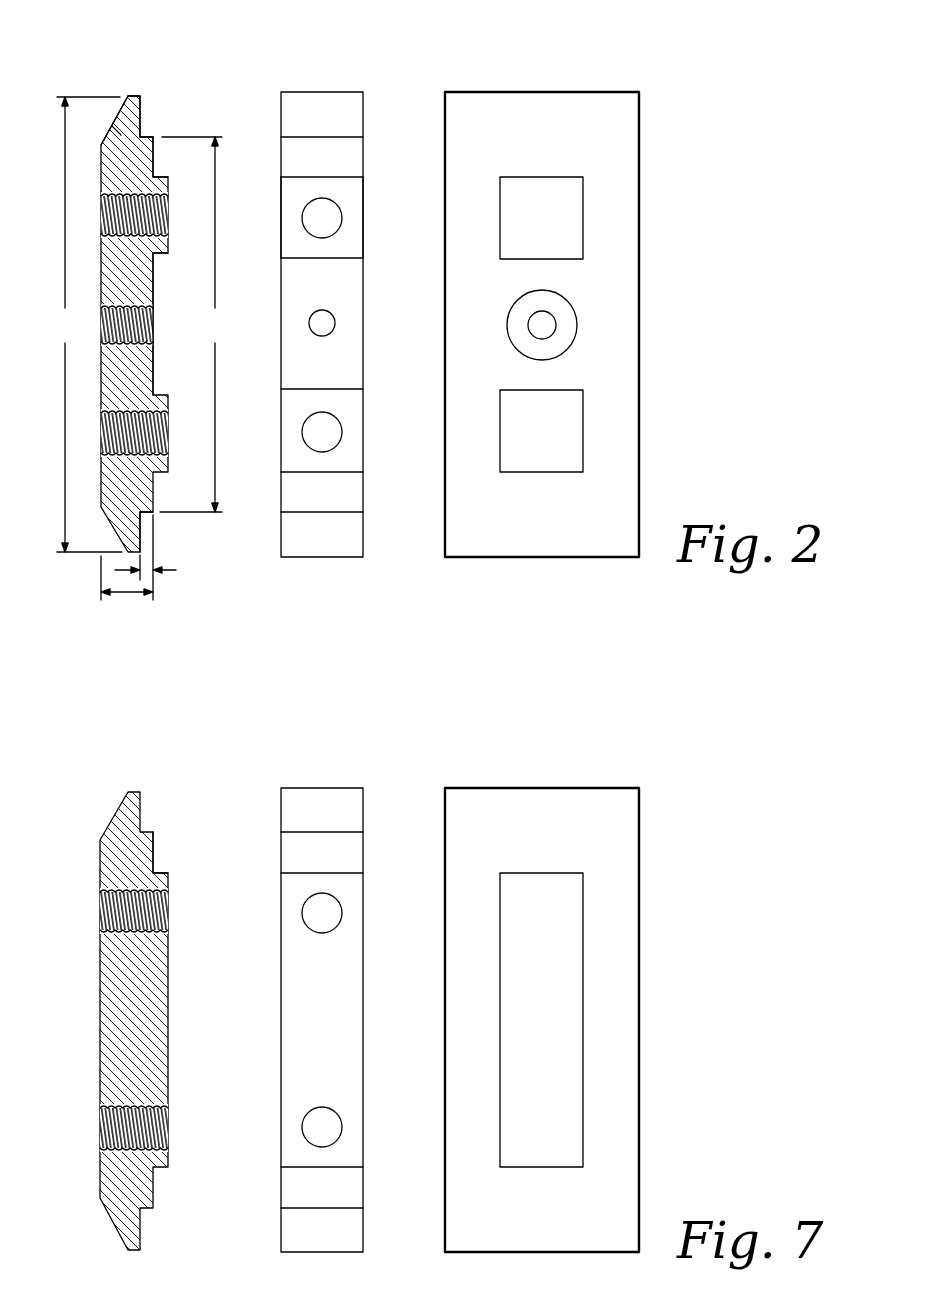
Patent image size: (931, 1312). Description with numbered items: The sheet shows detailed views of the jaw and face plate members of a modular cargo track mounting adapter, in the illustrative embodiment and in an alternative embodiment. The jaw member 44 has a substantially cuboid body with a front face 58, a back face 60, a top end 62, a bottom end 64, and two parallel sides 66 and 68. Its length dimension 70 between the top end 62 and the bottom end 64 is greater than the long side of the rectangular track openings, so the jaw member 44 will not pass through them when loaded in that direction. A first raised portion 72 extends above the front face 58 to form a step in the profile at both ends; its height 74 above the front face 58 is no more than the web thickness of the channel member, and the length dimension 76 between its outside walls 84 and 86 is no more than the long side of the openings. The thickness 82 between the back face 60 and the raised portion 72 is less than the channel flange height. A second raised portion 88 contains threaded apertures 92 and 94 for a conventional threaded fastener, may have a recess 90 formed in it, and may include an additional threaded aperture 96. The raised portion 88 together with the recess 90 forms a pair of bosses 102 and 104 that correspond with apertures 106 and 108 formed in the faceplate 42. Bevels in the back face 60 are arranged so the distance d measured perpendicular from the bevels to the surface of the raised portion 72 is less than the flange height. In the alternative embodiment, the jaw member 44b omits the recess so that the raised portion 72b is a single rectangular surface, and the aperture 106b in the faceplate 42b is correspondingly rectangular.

In FIG. 2, the faceplate 42 is at (659, 76).
In FIG. 2, the jaw member 44 is at (94, 78).
In FIG. 2, the front face 58 is at (142, 101).
In FIG. 2, the back face 60 is at (101, 168).
In FIG. 2, the top end 62 is at (327, 92).
In FIG. 2, the bottom end 64 is at (305, 557).
In FIG. 2, the side 66 is at (281, 212).
In FIG. 2, the side 68 is at (363, 240).
In FIG. 2, the length dimension 70 is at (87, 324).
In FIG. 2, the first raised portion 72 is at (154, 156).
In FIG. 2, the height 74 is at (159, 557).
In FIG. 2, the length dimension 76 is at (193, 324).
In FIG. 2, the thickness 82 is at (101, 592).
In FIG. 2, the outside wall 84 is at (147, 136).
In FIG. 2, the outside wall 86 is at (143, 513).
In FIG. 2, the second raised portion 88 is at (168, 242).
In FIG. 2, the recess 90 is at (153, 297).
In FIG. 2, the aperture 92 is at (103, 215).
In FIG. 2, the aperture 94 is at (102, 435).
In FIG. 2, the additional threaded aperture 96 is at (102, 322).
In FIG. 2, the boss 102 is at (355, 192).
In FIG. 2, the boss 104 is at (355, 410).
In FIG. 2, the aperture 106 is at (573, 205).
In FIG. 2, the aperture 108 is at (563, 420).
In FIG. 2, the distance d is at (110, 127).
In FIG. 7, the faceplate 42b is at (659, 770).
In FIG. 7, the jaw member 44b is at (94, 772).
In FIG. 7, the raised portion 72b is at (168, 880).
In FIG. 7, the aperture 106b is at (568, 892).